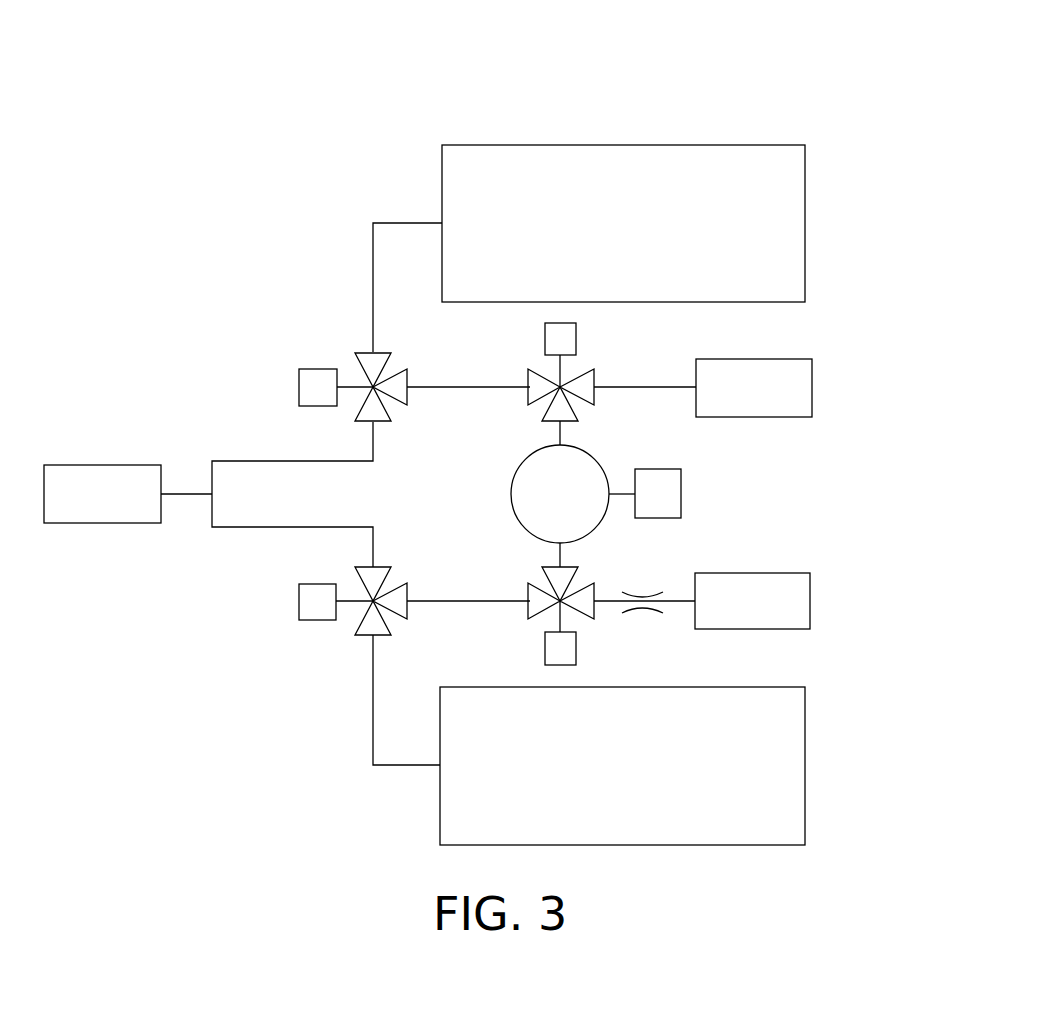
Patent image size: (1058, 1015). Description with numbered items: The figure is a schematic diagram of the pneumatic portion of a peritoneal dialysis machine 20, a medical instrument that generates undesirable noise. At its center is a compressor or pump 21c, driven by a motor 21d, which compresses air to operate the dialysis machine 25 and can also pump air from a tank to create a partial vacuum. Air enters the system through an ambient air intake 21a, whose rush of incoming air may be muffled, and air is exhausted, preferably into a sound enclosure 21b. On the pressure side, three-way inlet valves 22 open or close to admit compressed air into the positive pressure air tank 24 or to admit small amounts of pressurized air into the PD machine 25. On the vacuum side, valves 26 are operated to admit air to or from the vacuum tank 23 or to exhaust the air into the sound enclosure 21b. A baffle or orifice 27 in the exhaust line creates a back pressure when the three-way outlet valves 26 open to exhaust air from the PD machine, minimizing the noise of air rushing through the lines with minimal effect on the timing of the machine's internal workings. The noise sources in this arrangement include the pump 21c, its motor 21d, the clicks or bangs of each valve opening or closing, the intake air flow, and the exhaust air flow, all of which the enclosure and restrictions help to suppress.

The peritoneal dialysis machine 20 is at (519, 92).
The ambient air intake 21a is at (792, 359).
The sound enclosure 21b is at (795, 629).
The compressor or pump 21c is at (513, 499).
The motor 21d is at (658, 469).
The three-way inlet valve 22 is at (362, 352).
The vacuum tank 23 is at (440, 812).
The positive pressure air tank 24 is at (624, 145).
The PD machine 25 is at (107, 465).
The three-way outlet valve 26 is at (340, 629).
The baffle or orifice 27 is at (648, 606).